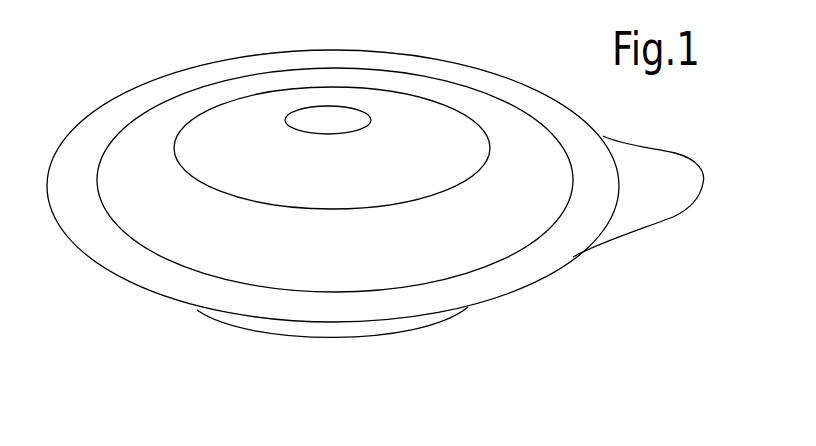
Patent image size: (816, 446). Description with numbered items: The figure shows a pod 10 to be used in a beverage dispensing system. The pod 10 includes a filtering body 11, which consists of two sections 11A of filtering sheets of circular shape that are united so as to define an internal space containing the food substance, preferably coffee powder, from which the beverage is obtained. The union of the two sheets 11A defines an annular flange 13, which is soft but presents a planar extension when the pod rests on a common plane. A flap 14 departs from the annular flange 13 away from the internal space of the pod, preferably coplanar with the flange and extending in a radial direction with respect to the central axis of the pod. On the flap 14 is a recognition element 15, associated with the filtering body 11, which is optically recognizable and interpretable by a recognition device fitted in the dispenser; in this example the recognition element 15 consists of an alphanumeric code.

The pod 10 is at (490, 54).
The filtering body 11 is at (334, 94).
The sections of filtering sheets 11A is at (257, 125).
The annular flange 13 is at (494, 287).
The flap 14 is at (665, 213).
The recognition element 15 is at (656, 171).